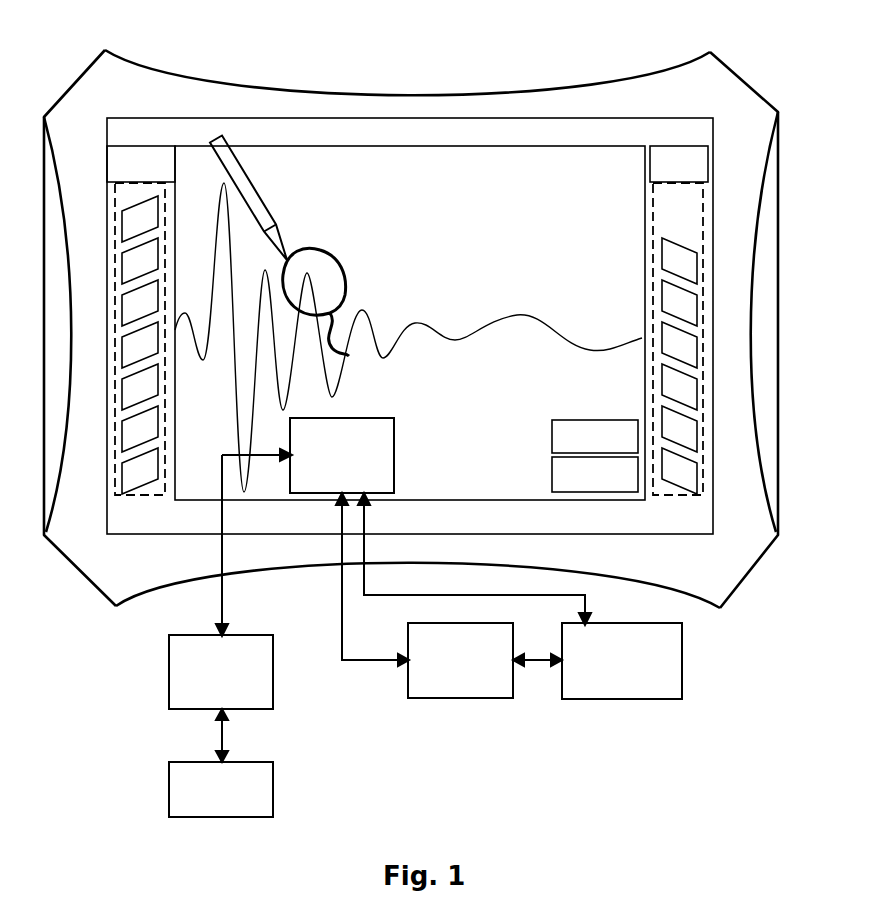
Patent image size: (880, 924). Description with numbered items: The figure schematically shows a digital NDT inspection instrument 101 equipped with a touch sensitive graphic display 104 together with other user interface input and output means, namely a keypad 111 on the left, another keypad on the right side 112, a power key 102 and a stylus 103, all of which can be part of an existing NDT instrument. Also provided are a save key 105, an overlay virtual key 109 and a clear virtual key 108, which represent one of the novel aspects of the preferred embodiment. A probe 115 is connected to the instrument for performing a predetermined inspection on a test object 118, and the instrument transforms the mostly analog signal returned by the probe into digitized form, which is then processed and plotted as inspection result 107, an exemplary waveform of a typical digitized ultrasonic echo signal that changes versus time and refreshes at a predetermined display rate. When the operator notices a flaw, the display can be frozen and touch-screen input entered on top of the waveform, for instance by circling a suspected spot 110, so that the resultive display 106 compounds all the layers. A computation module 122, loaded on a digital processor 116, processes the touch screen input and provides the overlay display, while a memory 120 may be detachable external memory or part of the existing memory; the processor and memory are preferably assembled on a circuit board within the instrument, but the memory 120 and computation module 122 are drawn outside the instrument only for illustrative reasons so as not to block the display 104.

The digital NDT inspection instrument 101 is at (395, 108).
The power key 102 is at (148, 155).
The stylus 103 is at (225, 138).
The touch sensitive graphic display 104 is at (395, 158).
The save key 105 is at (683, 153).
The resultive display 106 is at (537, 235).
The inspection result waveform 107 is at (400, 332).
The clear virtual key 108 is at (553, 440).
The overlay virtual key 109 is at (553, 478).
The circled spot 110 is at (333, 316).
The keypad 111 is at (147, 488).
The right side keypad 112 is at (675, 488).
The probe 115 is at (187, 667).
The digital processor 116 is at (342, 455).
The test object 118 is at (262, 790).
The memory 120 is at (442, 698).
The computation module 122 is at (682, 658).